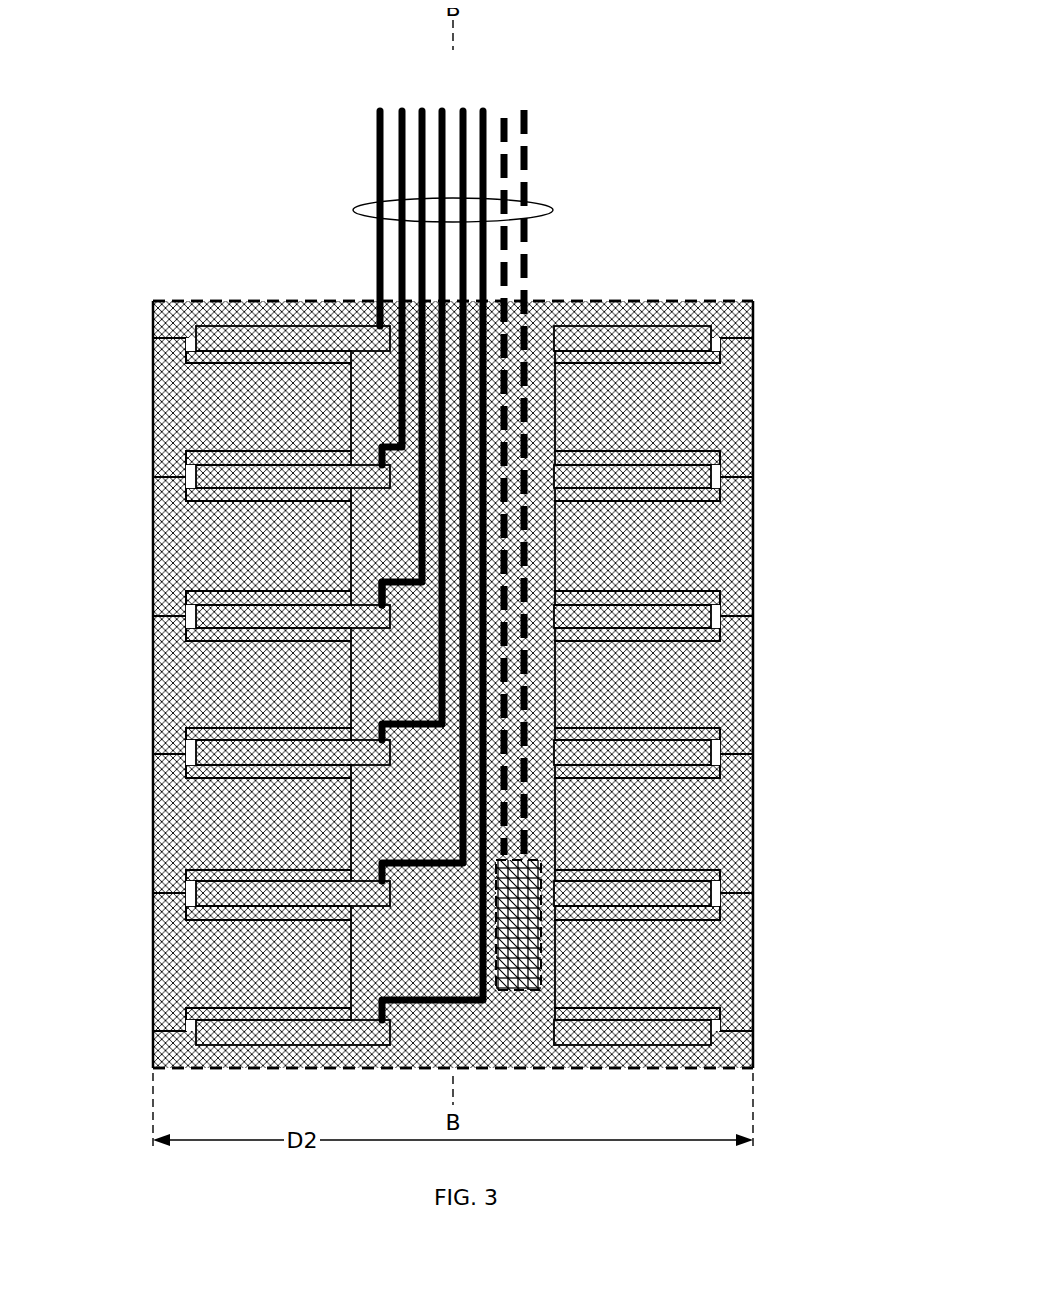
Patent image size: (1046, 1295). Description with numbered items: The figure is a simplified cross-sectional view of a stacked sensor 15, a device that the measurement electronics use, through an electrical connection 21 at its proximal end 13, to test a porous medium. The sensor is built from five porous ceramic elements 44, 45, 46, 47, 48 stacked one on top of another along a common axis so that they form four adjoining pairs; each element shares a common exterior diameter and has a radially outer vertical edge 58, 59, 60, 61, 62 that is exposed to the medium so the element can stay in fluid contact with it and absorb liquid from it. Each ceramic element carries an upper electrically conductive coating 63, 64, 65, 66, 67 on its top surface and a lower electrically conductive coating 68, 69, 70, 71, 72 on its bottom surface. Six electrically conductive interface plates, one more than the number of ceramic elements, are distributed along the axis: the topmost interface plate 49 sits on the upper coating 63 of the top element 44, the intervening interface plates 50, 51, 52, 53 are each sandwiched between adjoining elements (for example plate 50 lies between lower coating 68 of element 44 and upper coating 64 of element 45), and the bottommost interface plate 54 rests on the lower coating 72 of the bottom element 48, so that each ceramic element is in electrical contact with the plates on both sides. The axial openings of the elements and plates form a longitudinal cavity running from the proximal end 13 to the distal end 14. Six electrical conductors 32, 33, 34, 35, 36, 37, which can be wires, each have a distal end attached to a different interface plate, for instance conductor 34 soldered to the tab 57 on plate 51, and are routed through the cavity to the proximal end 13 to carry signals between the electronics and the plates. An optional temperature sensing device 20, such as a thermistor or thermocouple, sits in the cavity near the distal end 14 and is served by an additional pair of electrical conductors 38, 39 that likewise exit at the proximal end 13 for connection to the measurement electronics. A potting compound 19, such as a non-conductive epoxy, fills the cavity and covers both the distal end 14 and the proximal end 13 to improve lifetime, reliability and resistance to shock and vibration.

The proximal end 13 is at (752, 291).
The distal end 14 is at (256, 1063).
The stacked sensor 15 is at (138, 192).
The potting compound 19 is at (312, 300).
The temperature sensing device 20 is at (496, 930).
The electrical connection 21 is at (545, 202).
The electrical conductor 32 is at (372, 100).
The electrical conductor 33 is at (394, 100).
The electrical conductor 34 is at (414, 100).
The electrical conductor 35 is at (434, 100).
The electrical conductor 36 is at (455, 100).
The electrical conductor 37 is at (475, 100).
The additional electrical conductor 38 is at (496, 108).
The additional electrical conductor 39 is at (516, 100).
The porous ceramic element 44 is at (243, 411).
The porous ceramic element 45 is at (243, 551).
The porous ceramic element 46 is at (243, 691).
The porous ceramic element 47 is at (243, 828).
The porous ceramic element 48 is at (243, 970).
The topmost interface plate 49 is at (220, 332).
The intervening interface plate 50 is at (232, 470).
The intervening interface plate 51 is at (232, 610).
The intervening interface plate 52 is at (232, 745).
The intervening interface plate 53 is at (232, 886).
The bottommost interface plate 54 is at (232, 1025).
The tab 57 is at (379, 622).
The radially outer vertical edge 58 is at (145, 348).
The radially outer vertical edge 59 is at (145, 490).
The radially outer vertical edge 60 is at (145, 627).
The radially outer vertical edge 61 is at (145, 765).
The radially outer vertical edge 62 is at (145, 905).
The upper electrically conductive coating 63 is at (185, 356).
The upper electrically conductive coating 64 is at (185, 494).
The upper electrically conductive coating 65 is at (185, 634).
The upper electrically conductive coating 66 is at (185, 771).
The upper electrically conductive coating 67 is at (185, 913).
The lower electrically conductive coating 68 is at (205, 443).
The lower electrically conductive coating 69 is at (205, 583).
The lower electrically conductive coating 70 is at (205, 720).
The lower electrically conductive coating 71 is at (205, 862).
The lower electrically conductive coating 72 is at (205, 1000).